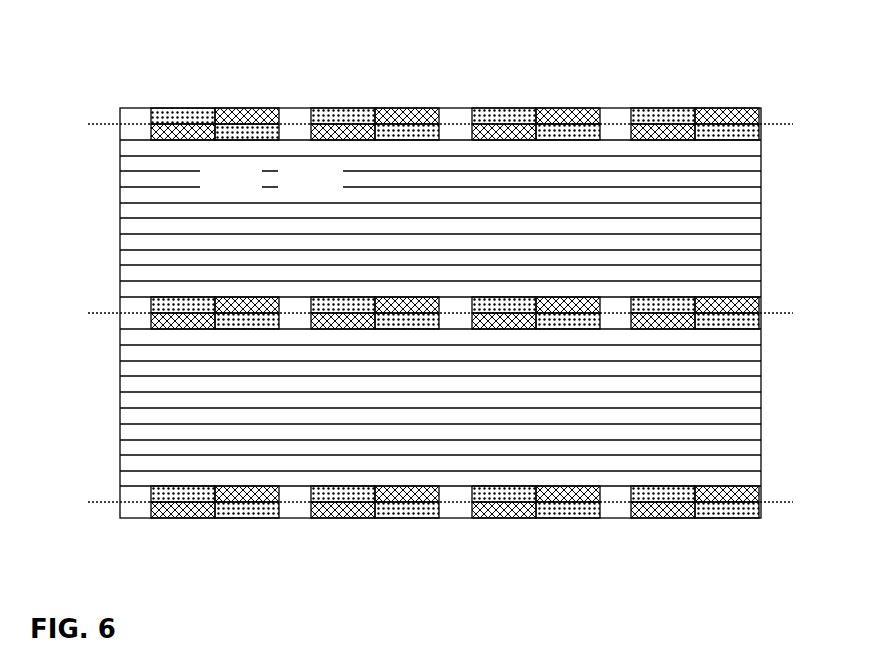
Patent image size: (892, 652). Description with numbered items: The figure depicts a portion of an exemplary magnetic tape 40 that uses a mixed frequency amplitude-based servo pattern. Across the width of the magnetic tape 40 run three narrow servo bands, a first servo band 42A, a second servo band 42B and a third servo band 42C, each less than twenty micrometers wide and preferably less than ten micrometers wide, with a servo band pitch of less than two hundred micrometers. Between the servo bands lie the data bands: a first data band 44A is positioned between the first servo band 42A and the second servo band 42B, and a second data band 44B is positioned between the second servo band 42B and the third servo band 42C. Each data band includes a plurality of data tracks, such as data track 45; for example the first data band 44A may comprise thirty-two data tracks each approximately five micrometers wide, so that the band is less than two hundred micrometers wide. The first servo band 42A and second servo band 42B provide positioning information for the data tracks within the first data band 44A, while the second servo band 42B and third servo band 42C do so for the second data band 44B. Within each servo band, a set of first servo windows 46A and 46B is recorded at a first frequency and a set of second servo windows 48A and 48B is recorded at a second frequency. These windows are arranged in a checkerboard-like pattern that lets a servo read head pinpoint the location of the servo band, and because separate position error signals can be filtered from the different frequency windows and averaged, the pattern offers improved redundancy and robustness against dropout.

The magnetic tape 40 is at (150, 43).
The first servo band 42A is at (473, 133).
The second servo band 42B is at (793, 313).
The third servo band 42C is at (793, 502).
The first data band 44A is at (103, 140).
The second data band 44B is at (103, 330).
The data track 45 is at (762, 195).
The first servo window 46A is at (167, 107).
The first servo window 46B is at (247, 143).
The second servo window 48A is at (168, 143).
The second servo window 48B is at (247, 107).